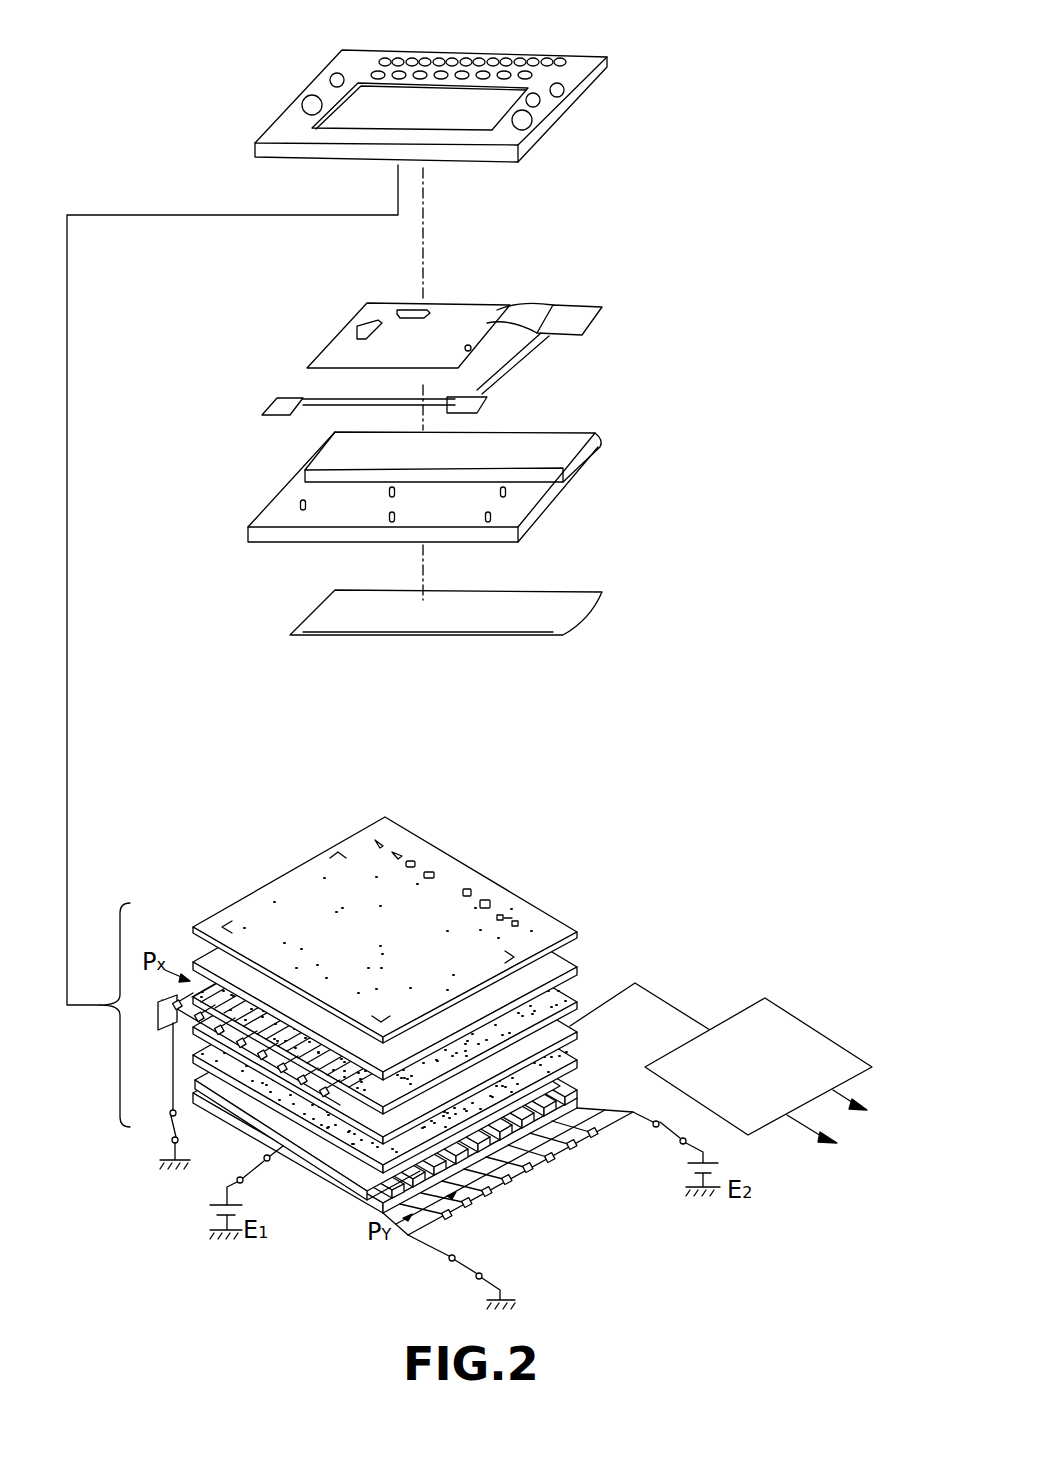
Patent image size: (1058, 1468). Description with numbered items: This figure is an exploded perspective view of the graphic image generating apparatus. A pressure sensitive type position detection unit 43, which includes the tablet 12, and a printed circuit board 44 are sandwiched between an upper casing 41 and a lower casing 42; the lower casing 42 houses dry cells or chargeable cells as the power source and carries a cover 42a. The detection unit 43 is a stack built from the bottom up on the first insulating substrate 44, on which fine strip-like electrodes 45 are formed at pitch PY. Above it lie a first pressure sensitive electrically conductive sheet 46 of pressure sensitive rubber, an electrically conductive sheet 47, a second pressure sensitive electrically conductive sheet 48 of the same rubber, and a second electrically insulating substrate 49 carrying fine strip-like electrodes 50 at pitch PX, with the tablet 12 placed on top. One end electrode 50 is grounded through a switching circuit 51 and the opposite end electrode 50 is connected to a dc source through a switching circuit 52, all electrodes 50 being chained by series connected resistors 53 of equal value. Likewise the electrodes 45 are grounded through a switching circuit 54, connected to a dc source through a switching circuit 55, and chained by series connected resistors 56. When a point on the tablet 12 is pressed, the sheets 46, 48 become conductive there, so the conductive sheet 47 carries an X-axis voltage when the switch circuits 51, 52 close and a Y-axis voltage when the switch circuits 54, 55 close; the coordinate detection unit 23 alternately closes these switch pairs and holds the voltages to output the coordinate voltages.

The upper casing 41 is at (362, 58).
The first insulating substrate 44 is at (358, 316).
The lower casing 42 is at (317, 463).
The cover 42a is at (327, 612).
The tablet 12 is at (352, 845).
The pressure sensitive type position detection unit 43 is at (385, 908).
The electrodes 50 is at (198, 976).
The second electrically insulating substrate 49 is at (565, 963).
The second pressure sensitive electrically conductive sheet 48 is at (408, 987).
The electrically conductive sheet 47 is at (575, 1018).
The first pressure sensitive electrically conductive sheet 46 is at (578, 1058).
The electrodes 45 is at (366, 1194).
The resistors 53 is at (158, 1028).
The switching circuit 51 is at (165, 1140).
The switching circuit 52 is at (262, 1179).
The resistors 56 is at (452, 1217).
The switching circuit 54 is at (450, 1263).
The switching circuit 55 is at (660, 1140).
The coordinate detection unit 23 is at (778, 1012).